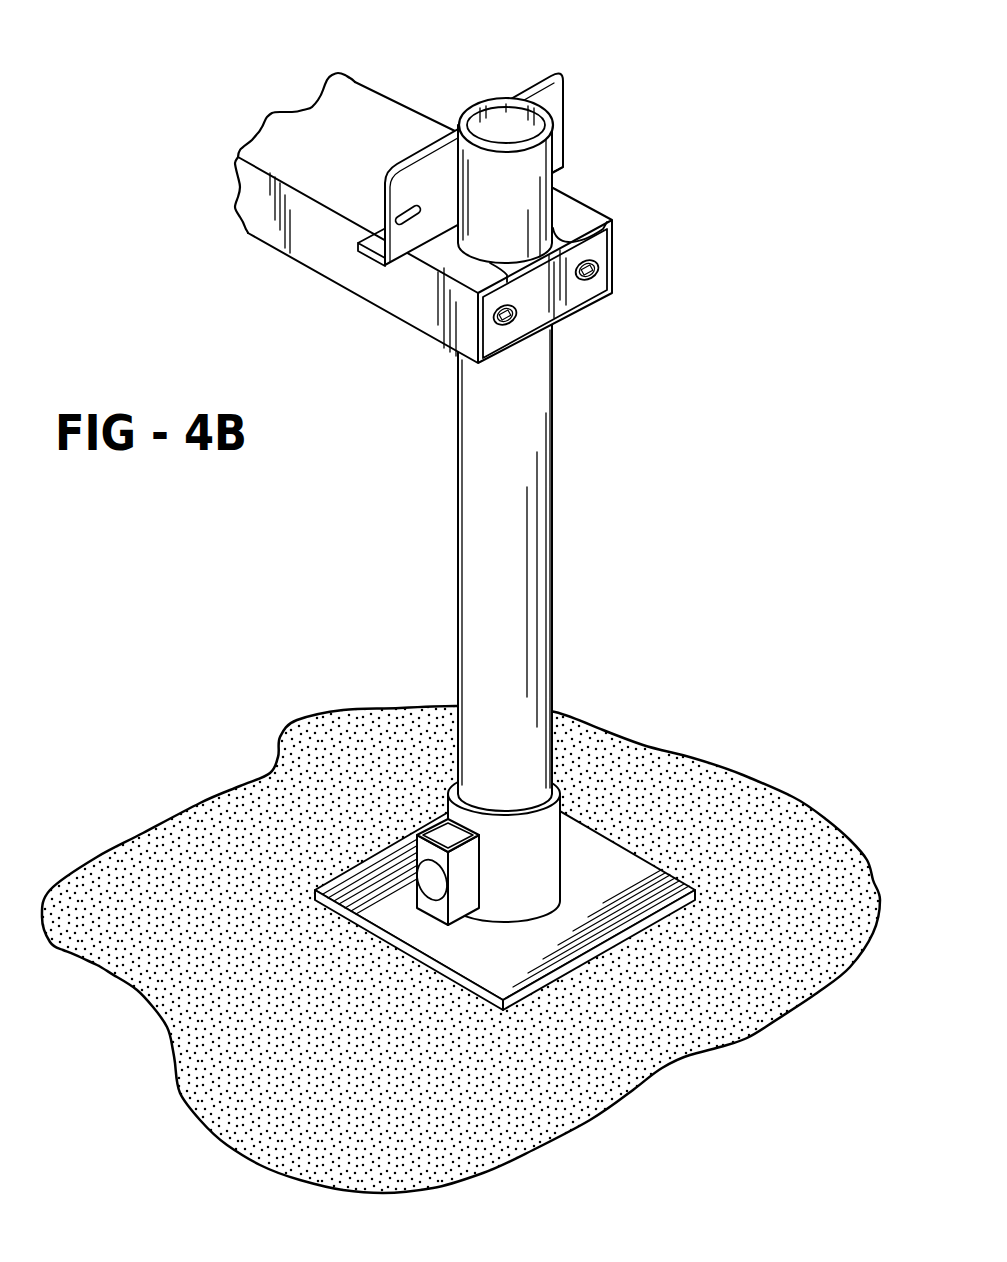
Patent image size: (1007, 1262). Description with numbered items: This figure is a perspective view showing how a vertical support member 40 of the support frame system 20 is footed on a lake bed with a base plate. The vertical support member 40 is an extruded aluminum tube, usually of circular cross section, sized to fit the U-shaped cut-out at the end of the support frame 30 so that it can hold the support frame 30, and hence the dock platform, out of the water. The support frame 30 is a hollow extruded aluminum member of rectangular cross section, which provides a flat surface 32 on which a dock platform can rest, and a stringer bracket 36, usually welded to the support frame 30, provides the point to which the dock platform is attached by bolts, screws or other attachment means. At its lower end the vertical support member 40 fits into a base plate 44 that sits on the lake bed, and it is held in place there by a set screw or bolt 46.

The support frame system 20 is at (568, 74).
The support frame 30 is at (574, 217).
The flat surface 32 is at (358, 97).
The stringer bracket 36 is at (502, 78).
The vertical support member 40 is at (520, 392).
The base plate 44 is at (378, 872).
The set screw or bolt 46 is at (440, 884).